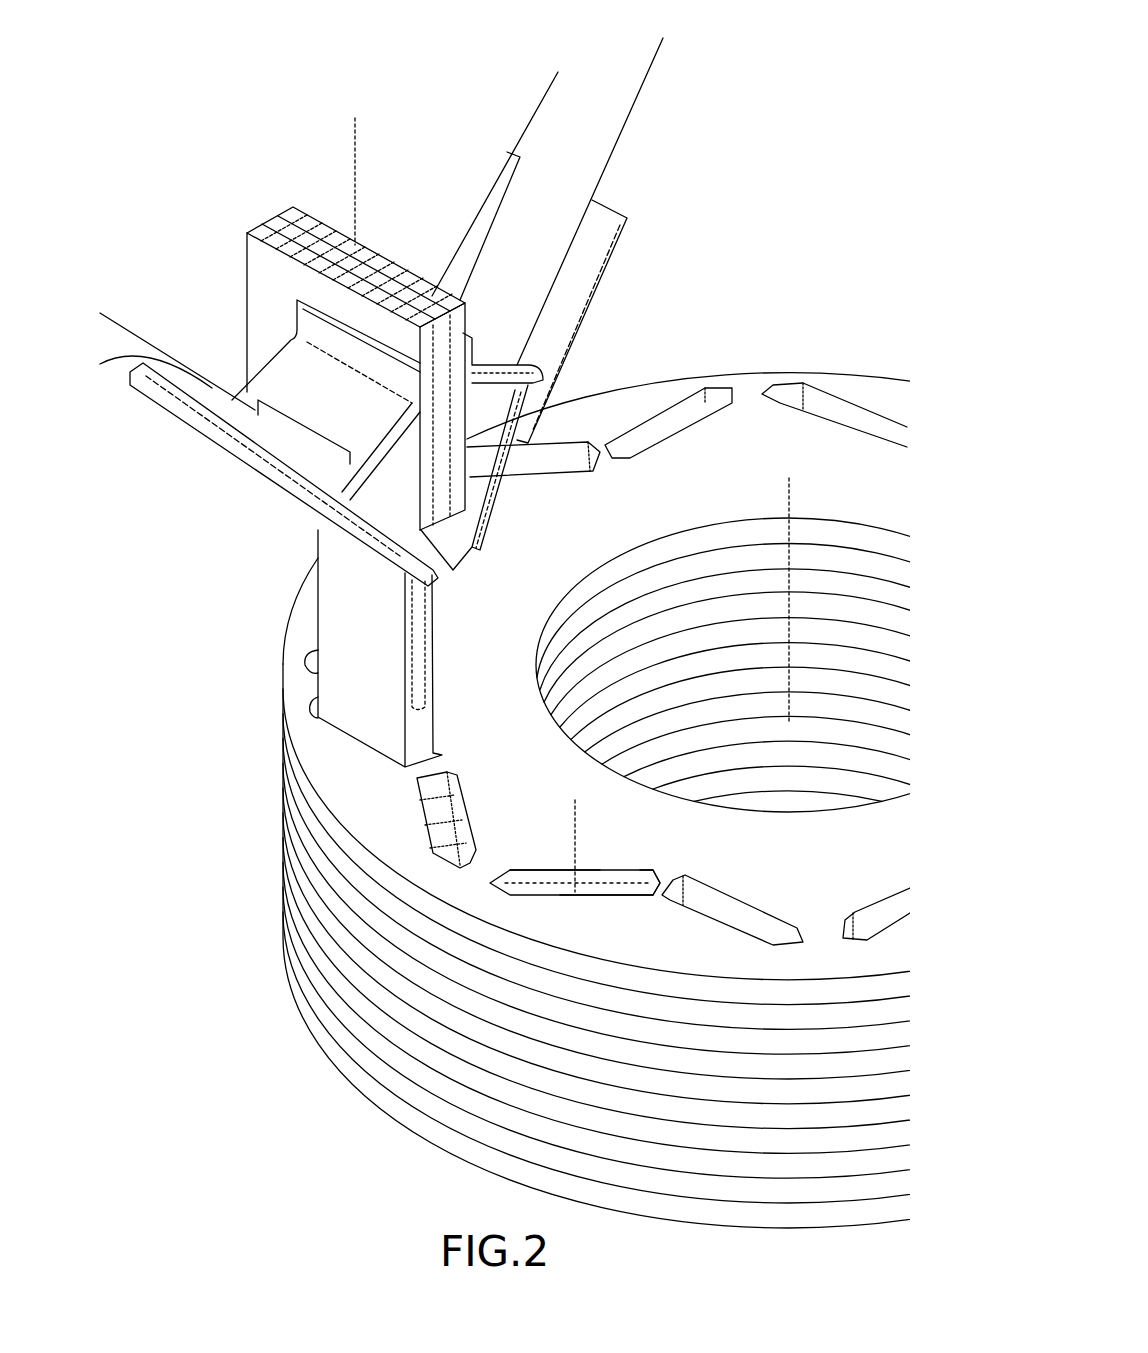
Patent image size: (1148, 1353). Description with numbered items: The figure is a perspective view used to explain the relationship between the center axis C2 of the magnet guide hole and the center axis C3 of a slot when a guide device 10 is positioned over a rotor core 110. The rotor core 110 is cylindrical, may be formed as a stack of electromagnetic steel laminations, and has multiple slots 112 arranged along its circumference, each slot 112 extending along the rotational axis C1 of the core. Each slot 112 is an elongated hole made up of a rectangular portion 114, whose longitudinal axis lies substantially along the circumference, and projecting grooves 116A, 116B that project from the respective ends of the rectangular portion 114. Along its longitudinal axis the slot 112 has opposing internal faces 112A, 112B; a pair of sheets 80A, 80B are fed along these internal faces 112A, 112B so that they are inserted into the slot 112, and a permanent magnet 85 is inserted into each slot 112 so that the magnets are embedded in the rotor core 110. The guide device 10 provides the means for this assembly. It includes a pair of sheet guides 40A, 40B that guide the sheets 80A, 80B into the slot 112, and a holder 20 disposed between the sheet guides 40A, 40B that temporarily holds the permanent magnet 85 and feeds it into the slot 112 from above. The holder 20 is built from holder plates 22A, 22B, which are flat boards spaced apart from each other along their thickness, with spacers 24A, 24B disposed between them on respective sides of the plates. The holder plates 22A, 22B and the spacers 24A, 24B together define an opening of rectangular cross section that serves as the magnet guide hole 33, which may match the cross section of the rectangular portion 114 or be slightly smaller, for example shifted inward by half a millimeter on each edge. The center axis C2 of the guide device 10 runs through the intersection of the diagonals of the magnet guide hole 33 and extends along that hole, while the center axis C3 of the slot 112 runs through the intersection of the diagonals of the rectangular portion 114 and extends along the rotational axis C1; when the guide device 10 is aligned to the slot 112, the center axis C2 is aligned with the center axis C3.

The guide device 10 is at (128, 215).
The holder 20 is at (240, 333).
The holder plate 22A is at (262, 253).
The holder plate 22B is at (325, 248).
The spacer 24A is at (432, 290).
The spacer 24B is at (293, 222).
The magnet guide hole 33 is at (393, 262).
The sheet guide 40A is at (185, 441).
The sheet guide 40B is at (623, 270).
The sheet 80A is at (343, 600).
The sheet 80B is at (597, 137).
The permanent magnet 85 is at (430, 640).
The rotor core 110 is at (284, 893).
The slot 112 is at (595, 872).
The internal face 112A is at (572, 870).
The internal face 112B is at (598, 895).
The rectangular portion 114 is at (650, 871).
The projecting groove 116A is at (472, 862).
The projecting groove 116B is at (663, 882).
The rotational axis C1 is at (787, 586).
The center axis of guide device C2 is at (355, 168).
The center axis of slot C3 is at (574, 833).